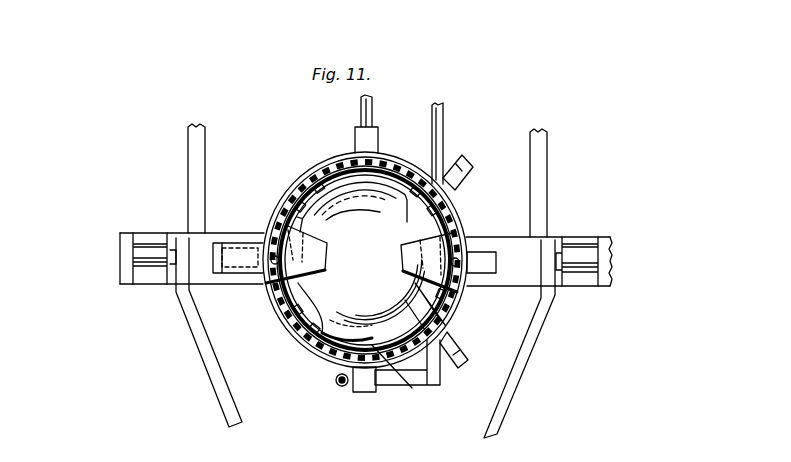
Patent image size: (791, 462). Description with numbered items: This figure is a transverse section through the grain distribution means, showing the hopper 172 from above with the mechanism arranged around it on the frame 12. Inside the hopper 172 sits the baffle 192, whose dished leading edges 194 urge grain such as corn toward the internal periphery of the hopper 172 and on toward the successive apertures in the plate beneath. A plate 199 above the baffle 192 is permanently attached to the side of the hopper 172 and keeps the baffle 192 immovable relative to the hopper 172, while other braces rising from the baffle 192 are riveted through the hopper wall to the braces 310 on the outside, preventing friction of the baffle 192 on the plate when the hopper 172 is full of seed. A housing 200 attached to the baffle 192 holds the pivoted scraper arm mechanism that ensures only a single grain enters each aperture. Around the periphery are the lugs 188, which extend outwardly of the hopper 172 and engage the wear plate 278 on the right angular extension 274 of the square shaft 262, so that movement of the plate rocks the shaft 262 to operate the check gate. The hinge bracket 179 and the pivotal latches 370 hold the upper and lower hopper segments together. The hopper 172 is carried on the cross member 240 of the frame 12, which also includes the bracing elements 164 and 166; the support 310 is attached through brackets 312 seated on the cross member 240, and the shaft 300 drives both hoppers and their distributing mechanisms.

The frame 12 is at (476, 293).
The bracing element 164 is at (547, 182).
The bracing element 166 is at (197, 158).
The hopper 172 is at (445, 240).
The bracket 179 is at (217, 273).
The lugs 188 is at (365, 392).
The baffle 192 is at (350, 217).
The dished leading edges 194 is at (298, 191).
The plate 199 is at (278, 312).
The housing 200 is at (455, 335).
The cross member 240 is at (482, 237).
The shaft 262 is at (440, 128).
The right angular extension 274 is at (336, 380).
The wear plate 278 is at (342, 389).
The shaft 300 is at (373, 110).
The support 310 is at (208, 377).
The brackets 312 is at (125, 259).
The pivotal latches 370 is at (460, 162).